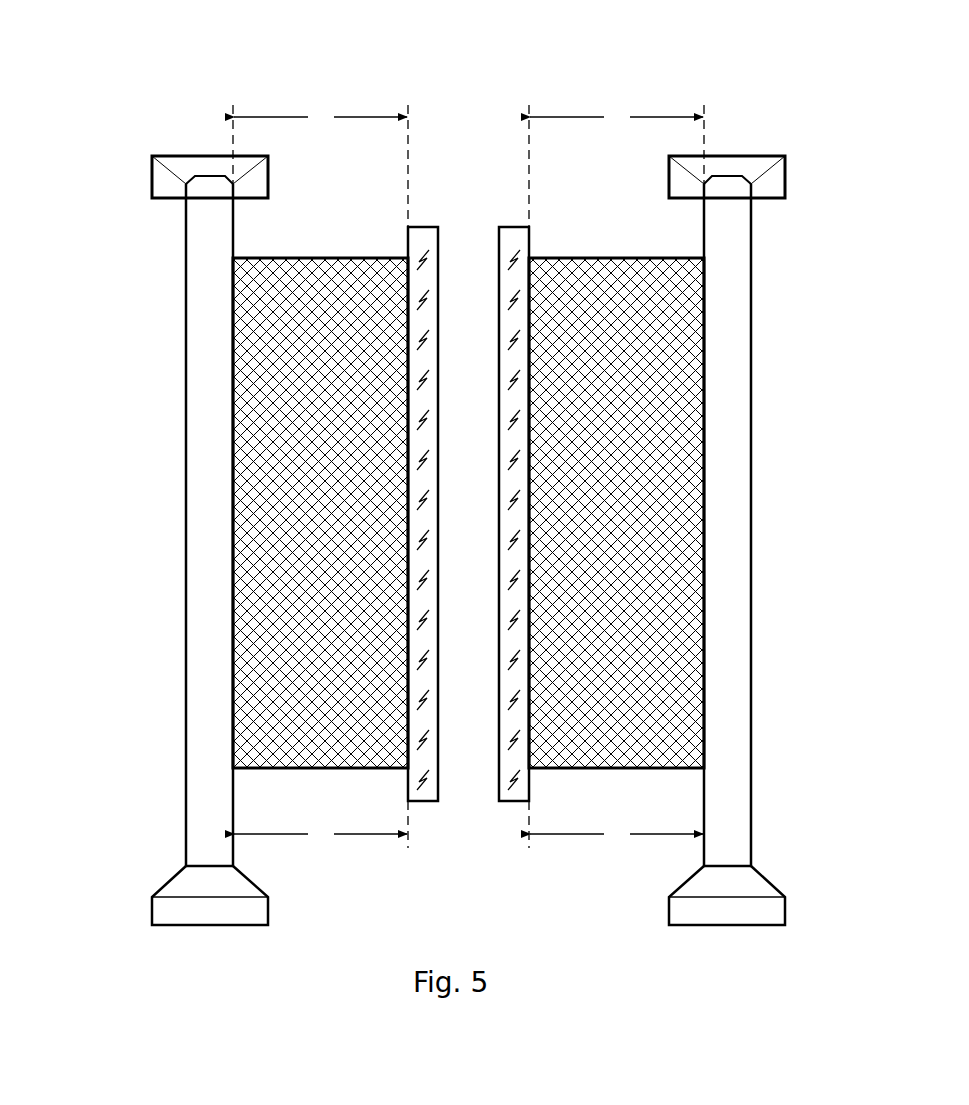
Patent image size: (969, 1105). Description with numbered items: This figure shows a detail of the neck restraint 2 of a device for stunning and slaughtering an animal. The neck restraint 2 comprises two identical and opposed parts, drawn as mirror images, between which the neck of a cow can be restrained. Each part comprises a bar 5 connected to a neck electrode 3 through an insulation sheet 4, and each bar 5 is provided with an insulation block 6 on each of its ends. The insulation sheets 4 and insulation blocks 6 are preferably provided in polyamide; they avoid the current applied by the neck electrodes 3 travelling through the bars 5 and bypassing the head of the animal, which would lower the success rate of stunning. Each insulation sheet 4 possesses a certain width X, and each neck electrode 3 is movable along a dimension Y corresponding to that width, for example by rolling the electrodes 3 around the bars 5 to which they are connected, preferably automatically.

The neck restraint 2 is at (110, 66).
The neck electrode 3 is at (413, 237).
The insulation sheet 4 is at (305, 473).
The bar 5 is at (205, 578).
The insulation block 6 is at (165, 180).